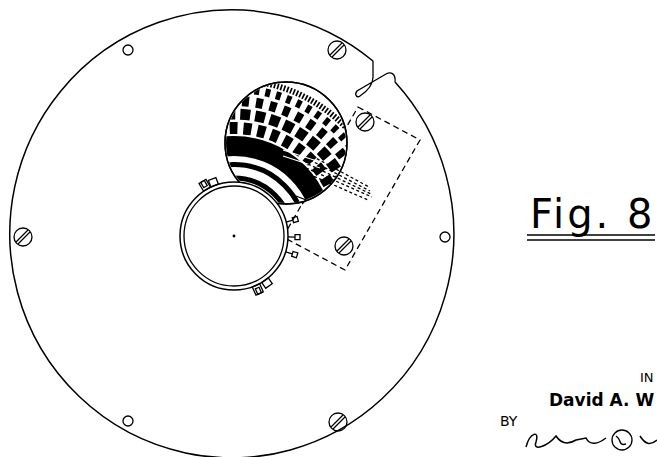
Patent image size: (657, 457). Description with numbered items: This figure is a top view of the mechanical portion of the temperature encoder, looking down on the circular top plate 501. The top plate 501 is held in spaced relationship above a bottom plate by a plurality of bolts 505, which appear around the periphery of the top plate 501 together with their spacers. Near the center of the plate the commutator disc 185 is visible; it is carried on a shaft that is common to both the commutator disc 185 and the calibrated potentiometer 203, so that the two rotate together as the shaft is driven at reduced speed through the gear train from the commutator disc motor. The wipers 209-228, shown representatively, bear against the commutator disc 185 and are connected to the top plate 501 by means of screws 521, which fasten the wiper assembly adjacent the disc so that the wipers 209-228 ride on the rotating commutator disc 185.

The top plate 501 is at (447, 188).
The bolts 505 is at (346, 46).
The screws 521 is at (368, 131).
The commutator disc 185 is at (238, 106).
The wipers 209-228 is at (306, 200).
The calibrated potentiometer 203 is at (277, 275).